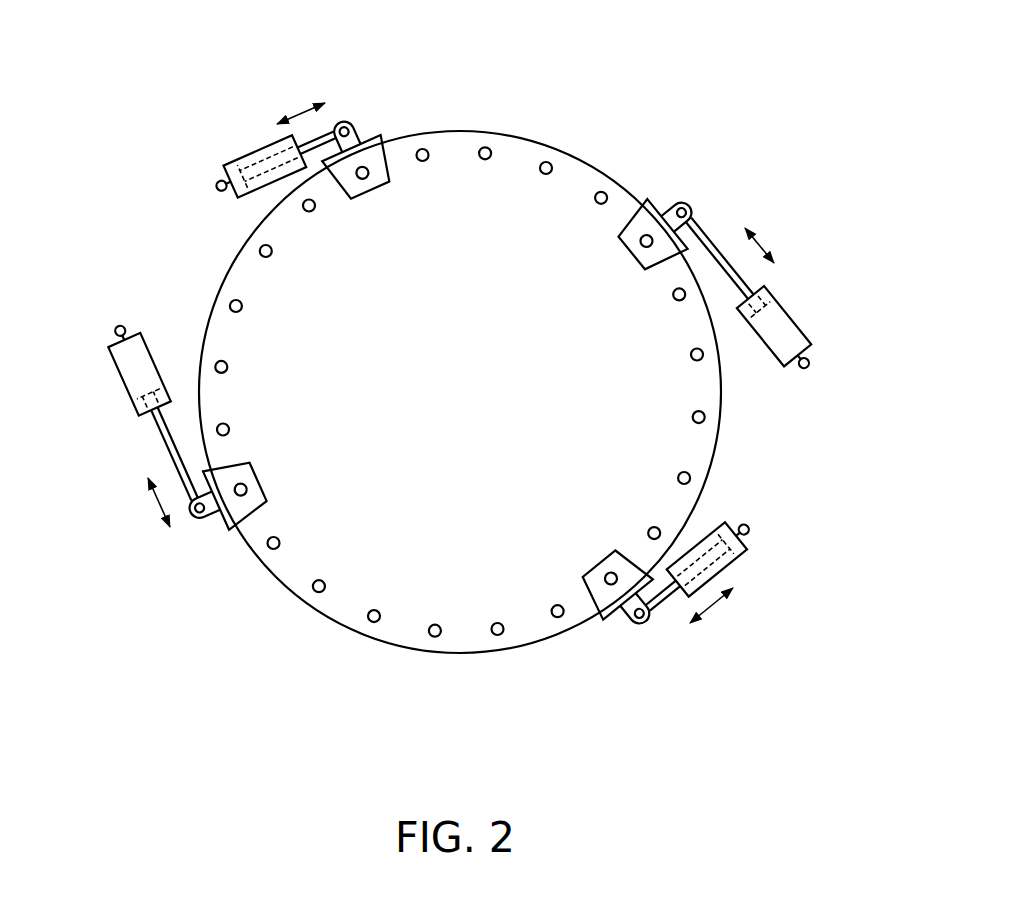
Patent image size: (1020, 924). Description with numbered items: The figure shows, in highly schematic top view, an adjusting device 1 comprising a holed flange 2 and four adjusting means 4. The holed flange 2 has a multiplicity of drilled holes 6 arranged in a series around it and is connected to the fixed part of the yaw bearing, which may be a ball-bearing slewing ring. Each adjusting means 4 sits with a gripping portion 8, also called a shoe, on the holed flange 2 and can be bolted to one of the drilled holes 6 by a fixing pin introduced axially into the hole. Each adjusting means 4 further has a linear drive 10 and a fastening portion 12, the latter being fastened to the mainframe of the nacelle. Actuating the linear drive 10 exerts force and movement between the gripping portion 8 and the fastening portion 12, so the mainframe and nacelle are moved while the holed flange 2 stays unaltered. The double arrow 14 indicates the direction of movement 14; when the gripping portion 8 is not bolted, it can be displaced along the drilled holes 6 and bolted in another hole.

The adjusting device 1 is at (713, 77).
The holed flange 2 is at (510, 134).
The adjusting means 4 is at (465, 363).
The drilled holes 6 is at (600, 204).
The gripping portion 8 is at (368, 141).
The linear drive 10 is at (248, 148).
The fastening portion 12 is at (216, 182).
The direction of movement 14 is at (297, 110).